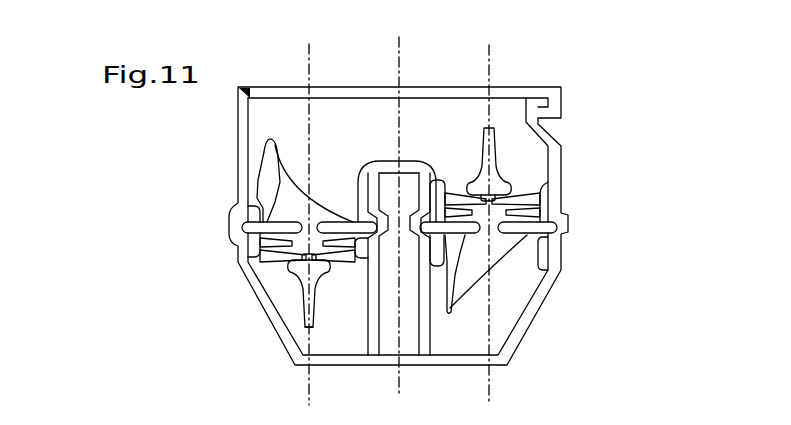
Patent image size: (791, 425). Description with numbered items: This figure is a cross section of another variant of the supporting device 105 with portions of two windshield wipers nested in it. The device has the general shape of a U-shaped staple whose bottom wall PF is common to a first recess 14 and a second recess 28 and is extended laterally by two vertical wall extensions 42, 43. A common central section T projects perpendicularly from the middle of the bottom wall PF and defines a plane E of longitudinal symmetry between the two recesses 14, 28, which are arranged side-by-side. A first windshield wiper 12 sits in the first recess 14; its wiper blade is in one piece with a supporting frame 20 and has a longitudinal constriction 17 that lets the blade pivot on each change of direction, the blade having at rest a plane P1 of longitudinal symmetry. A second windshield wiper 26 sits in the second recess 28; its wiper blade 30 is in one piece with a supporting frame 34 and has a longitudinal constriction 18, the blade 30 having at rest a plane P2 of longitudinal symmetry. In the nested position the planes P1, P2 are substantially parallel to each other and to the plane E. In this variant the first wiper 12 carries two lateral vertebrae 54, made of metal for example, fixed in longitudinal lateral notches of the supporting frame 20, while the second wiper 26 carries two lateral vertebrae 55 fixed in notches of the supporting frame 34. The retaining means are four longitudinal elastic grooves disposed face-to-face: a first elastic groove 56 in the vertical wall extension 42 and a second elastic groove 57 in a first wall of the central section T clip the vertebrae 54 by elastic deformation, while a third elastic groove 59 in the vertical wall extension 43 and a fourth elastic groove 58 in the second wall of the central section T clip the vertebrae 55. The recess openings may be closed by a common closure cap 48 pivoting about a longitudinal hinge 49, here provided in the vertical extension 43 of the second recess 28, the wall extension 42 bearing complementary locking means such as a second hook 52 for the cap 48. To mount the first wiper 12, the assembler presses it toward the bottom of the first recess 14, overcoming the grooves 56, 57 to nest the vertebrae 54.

The supporting device 105 is at (572, 88).
The first windshield wiper 12 is at (530, 177).
The first recess 14 is at (471, 349).
The longitudinal constriction 17 is at (462, 182).
The longitudinal constriction 18 is at (289, 276).
The supporting frame 20 is at (447, 287).
The second windshield wiper 26 is at (255, 161).
The second recess 28 is at (352, 348).
The wiper blade 30 is at (303, 312).
The supporting frame 34 is at (289, 170).
The vertical wall extension 42 is at (552, 190).
The vertical wall extension 43 is at (237, 250).
The common closure cap 48 is at (505, 86).
The longitudinal hinge 49 is at (247, 86).
The second hook 52 is at (162, 424).
The lateral vertebrae 54 is at (465, 236).
The lateral vertebrae 55 is at (247, 230).
The first elastic groove 56 is at (550, 237).
The second elastic groove 57 is at (482, 196).
The fourth elastic groove 58 is at (368, 275).
The third elastic groove 59 is at (239, 193).
The plane of longitudinal symmetry P1 is at (489, 60).
The plane of longitudinal symmetry P2 is at (309, 57).
The plane of longitudinal symmetry E is at (399, 60).
The common central section T is at (387, 172).
The bottom wall PF is at (385, 366).